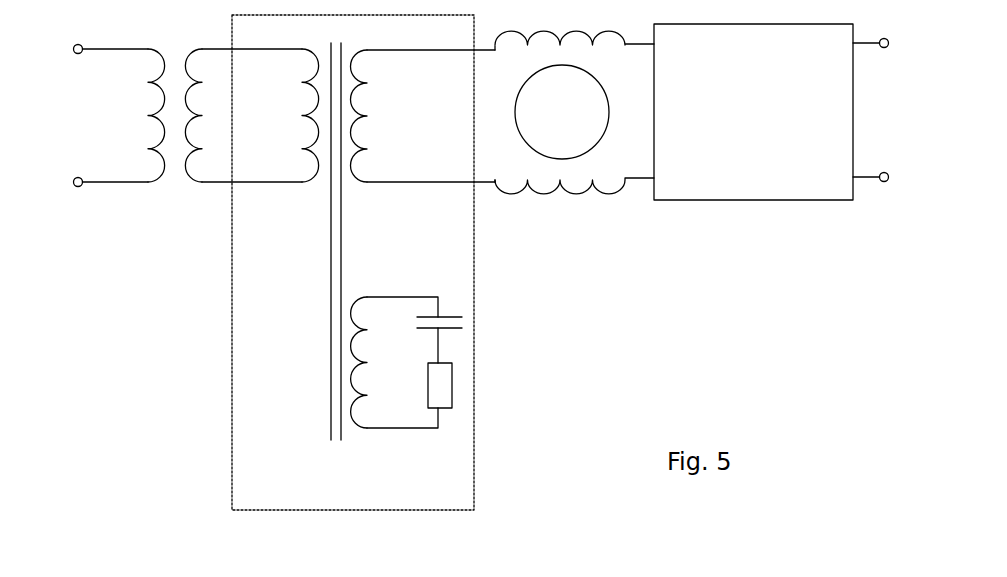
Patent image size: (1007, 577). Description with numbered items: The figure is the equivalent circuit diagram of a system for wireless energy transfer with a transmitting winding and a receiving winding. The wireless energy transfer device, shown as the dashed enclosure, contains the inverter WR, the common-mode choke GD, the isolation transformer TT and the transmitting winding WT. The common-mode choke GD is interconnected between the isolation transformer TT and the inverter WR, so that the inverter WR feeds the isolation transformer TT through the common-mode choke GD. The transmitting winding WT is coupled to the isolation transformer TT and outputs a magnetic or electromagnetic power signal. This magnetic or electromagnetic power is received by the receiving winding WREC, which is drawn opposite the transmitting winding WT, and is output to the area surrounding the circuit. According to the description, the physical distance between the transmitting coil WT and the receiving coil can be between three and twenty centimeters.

The receiving winding WREC is at (163, 125).
The transmitting winding WT is at (193, 183).
The isolation transformer TT is at (232, 337).
The common-mode choke GD is at (578, 225).
The inverter WR is at (790, 200).